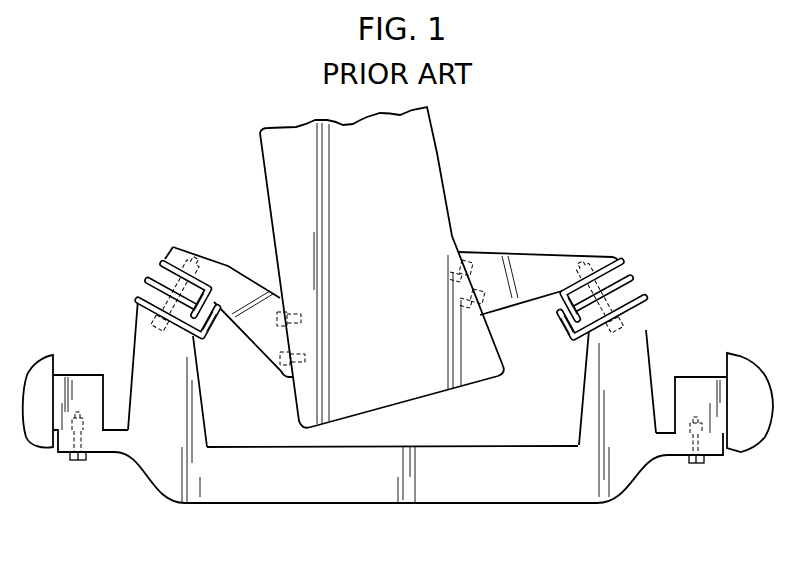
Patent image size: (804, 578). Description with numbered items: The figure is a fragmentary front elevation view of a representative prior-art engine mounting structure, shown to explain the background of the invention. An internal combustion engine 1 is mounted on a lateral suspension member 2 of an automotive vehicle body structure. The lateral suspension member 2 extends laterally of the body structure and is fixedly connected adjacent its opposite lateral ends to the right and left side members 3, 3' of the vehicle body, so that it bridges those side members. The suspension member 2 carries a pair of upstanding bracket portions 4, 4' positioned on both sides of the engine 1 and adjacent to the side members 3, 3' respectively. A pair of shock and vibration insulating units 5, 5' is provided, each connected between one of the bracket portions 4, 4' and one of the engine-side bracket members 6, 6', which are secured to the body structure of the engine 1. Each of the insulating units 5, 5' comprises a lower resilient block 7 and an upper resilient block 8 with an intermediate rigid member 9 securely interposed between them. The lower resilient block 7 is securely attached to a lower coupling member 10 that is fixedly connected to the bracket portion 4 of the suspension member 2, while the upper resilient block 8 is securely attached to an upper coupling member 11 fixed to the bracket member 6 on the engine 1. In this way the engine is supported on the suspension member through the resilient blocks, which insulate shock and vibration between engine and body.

The internal combustion engine 1 is at (462, 170).
The lateral suspension member 2 is at (530, 511).
The side member 3 is at (75, 398).
The side member 3' is at (714, 398).
The upstanding bracket portion 4 is at (181, 373).
The upstanding bracket portion 4' is at (596, 388).
The shock and vibration insulating unit 5 is at (155, 259).
The shock and vibration insulating unit 5' is at (621, 259).
The engine-side bracket member 6 is at (229, 309).
The engine-side bracket member 6' is at (537, 266).
The lower resilient block 7 is at (140, 297).
The upper resilient block 8 is at (163, 262).
The intermediate rigid member 9 is at (155, 279).
The lower coupling member 10 is at (212, 320).
The upper coupling member 11 is at (190, 254).